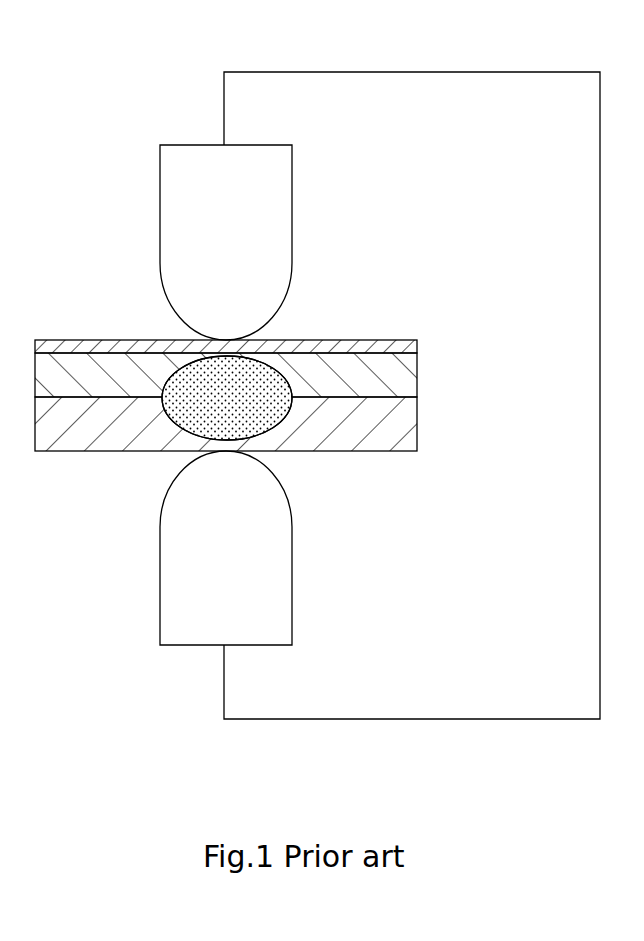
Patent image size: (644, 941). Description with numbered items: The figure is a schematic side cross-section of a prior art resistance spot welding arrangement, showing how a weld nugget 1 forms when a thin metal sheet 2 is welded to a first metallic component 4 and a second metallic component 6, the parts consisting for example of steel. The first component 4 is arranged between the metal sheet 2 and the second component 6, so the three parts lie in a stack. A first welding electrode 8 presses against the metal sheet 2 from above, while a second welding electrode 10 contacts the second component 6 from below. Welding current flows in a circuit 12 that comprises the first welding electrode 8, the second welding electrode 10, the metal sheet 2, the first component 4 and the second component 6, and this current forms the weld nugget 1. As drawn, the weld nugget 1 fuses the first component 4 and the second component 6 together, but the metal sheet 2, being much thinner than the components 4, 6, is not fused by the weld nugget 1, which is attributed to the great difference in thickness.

The weld nugget 1 is at (267, 387).
The metal sheet 2 is at (390, 348).
The first metallic component 4 is at (407, 373).
The second metallic component 6 is at (405, 432).
The first welding electrode 8 is at (273, 197).
The second welding electrode 10 is at (272, 582).
The circuit 12 is at (487, 70).